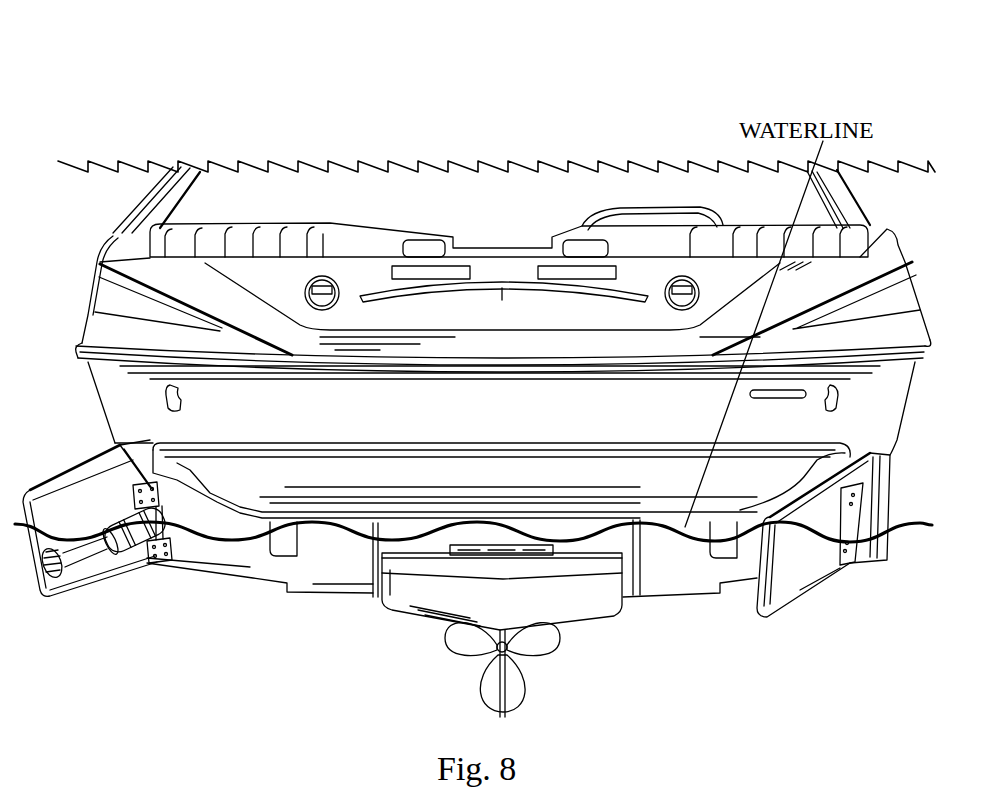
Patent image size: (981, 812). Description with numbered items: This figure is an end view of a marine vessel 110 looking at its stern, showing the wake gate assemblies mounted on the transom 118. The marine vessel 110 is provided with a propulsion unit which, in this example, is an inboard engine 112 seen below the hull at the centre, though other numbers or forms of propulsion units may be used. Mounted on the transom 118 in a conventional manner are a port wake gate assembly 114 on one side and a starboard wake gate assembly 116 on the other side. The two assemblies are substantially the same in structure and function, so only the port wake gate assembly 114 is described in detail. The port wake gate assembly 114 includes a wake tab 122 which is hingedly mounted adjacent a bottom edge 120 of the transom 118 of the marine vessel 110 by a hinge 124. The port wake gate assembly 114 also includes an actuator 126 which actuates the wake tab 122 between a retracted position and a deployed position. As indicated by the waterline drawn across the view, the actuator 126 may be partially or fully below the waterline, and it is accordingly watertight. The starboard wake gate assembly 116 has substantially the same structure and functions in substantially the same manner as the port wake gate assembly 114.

The marine vessel 110 is at (152, 125).
The inboard engine 112 is at (443, 650).
The port wake gate assembly 114 is at (120, 577).
The starboard wake gate assembly 116 is at (777, 585).
The transom 118 is at (333, 558).
The bottom edge 120 is at (253, 580).
The wake tab 122 is at (70, 583).
The hinge 124 is at (170, 563).
The actuator 126 is at (123, 547).